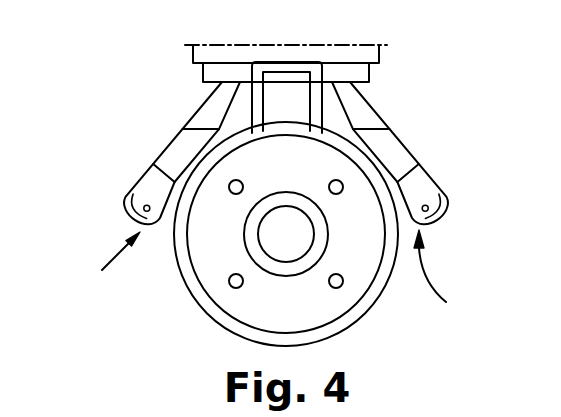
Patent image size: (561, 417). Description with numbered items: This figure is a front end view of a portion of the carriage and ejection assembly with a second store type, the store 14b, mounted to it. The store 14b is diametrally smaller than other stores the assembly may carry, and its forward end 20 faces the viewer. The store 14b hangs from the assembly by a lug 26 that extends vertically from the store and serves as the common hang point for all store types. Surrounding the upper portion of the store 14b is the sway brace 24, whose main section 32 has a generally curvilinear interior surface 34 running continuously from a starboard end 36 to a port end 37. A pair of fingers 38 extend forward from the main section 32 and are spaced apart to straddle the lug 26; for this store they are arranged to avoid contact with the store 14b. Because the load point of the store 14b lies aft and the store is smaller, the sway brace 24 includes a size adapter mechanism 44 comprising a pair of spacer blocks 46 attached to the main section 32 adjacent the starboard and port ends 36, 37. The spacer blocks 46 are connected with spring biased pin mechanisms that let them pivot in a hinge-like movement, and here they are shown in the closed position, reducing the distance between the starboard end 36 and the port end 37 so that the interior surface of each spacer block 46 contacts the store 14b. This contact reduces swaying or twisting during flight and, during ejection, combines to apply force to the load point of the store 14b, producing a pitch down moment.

The store 14b is at (357, 278).
The forward end 20 is at (280, 266).
The sway brace 24 is at (368, 84).
The lug 26 is at (295, 67).
The main section 32 is at (398, 143).
The interior surface 34 is at (190, 128).
The starboard end 36 is at (140, 192).
The port end 37 is at (436, 196).
The finger 38 is at (210, 114).
The size adapter mechanism 44 is at (273, 277).
The spacer block 46 is at (157, 161).